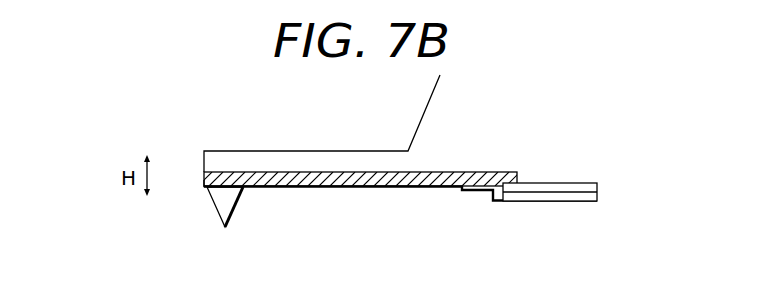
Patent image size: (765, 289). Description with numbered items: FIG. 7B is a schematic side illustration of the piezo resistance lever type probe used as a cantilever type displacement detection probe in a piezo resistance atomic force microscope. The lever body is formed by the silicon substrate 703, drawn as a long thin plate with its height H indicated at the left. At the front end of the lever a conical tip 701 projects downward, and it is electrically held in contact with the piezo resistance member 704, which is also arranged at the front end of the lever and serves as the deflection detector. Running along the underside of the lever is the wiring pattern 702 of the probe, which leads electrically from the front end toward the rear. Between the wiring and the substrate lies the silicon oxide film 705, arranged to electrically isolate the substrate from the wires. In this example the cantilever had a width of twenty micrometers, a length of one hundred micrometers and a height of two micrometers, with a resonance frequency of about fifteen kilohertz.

The conical tip 701 is at (217, 203).
The wiring pattern 702 is at (503, 197).
The silicon substrate 703 is at (315, 157).
The piezo resistance member 704 is at (205, 187).
The silicon oxide film 705 is at (567, 185).